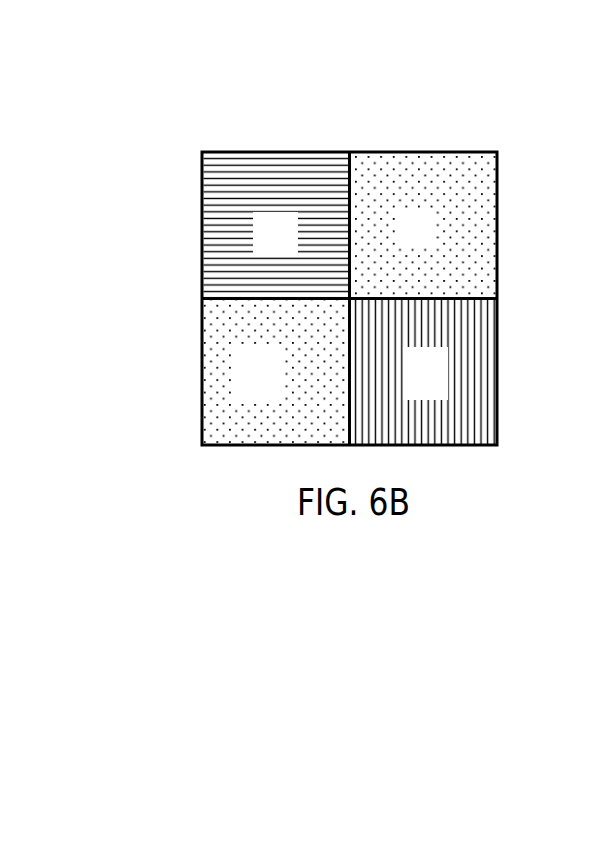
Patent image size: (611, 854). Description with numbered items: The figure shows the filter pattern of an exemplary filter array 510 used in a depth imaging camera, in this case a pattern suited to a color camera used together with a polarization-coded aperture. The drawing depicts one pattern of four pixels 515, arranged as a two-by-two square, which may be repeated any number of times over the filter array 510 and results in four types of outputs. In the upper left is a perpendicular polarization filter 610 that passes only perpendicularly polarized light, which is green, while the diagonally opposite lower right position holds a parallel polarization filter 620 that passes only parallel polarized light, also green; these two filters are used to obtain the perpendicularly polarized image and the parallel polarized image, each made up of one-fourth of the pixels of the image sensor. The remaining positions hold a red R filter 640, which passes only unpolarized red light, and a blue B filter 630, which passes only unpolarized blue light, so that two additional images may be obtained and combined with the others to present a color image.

The filter array 510 is at (348, 231).
The pattern of four pixels 515 is at (348, 252).
The perpendicular polarization filter 610 is at (228, 258).
The parallel polarization filter 620 is at (460, 412).
The blue B filter 630 is at (228, 393).
The red R filter 640 is at (460, 238).